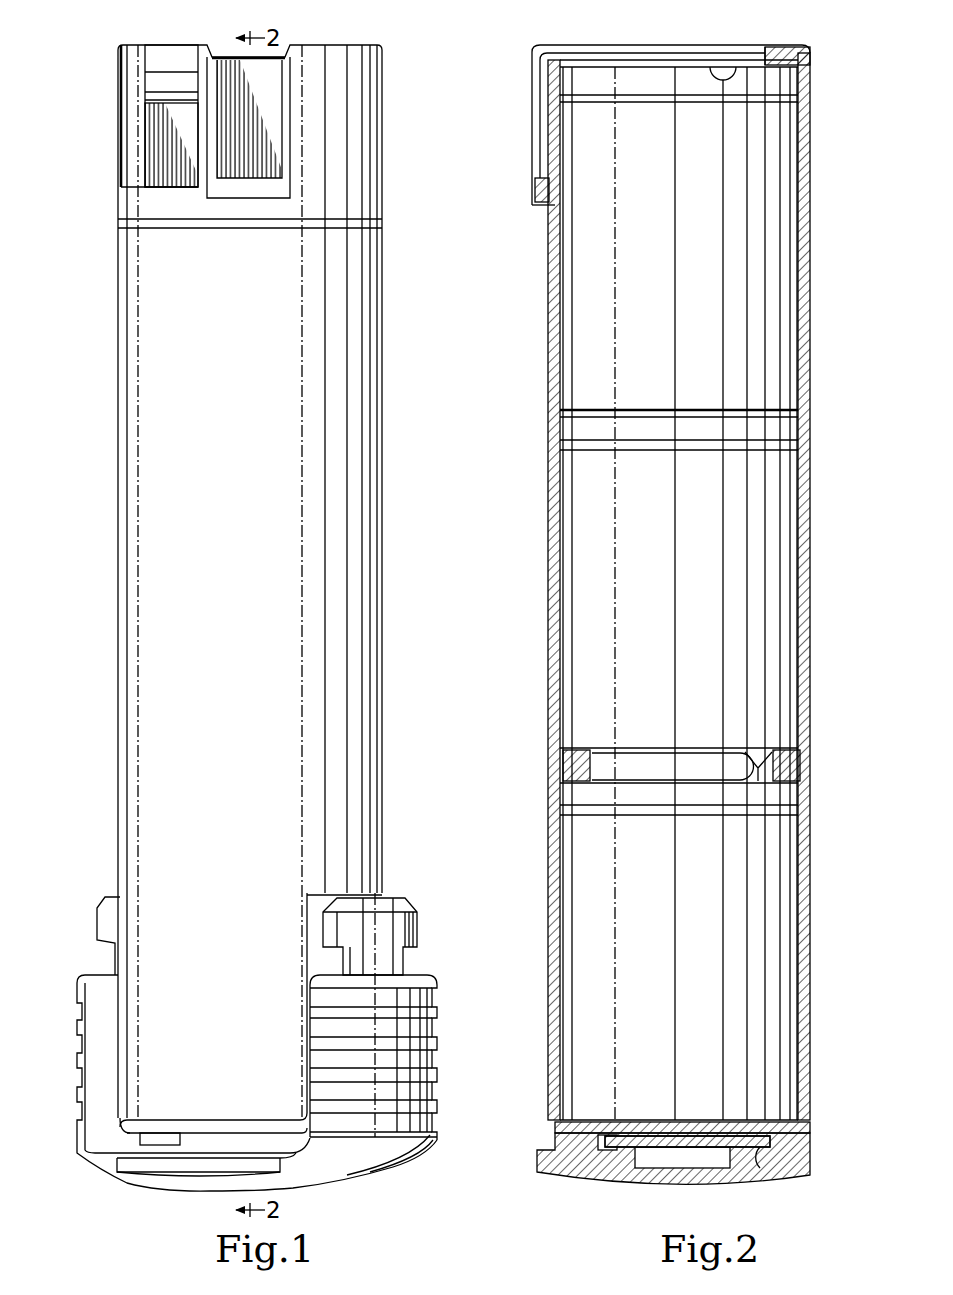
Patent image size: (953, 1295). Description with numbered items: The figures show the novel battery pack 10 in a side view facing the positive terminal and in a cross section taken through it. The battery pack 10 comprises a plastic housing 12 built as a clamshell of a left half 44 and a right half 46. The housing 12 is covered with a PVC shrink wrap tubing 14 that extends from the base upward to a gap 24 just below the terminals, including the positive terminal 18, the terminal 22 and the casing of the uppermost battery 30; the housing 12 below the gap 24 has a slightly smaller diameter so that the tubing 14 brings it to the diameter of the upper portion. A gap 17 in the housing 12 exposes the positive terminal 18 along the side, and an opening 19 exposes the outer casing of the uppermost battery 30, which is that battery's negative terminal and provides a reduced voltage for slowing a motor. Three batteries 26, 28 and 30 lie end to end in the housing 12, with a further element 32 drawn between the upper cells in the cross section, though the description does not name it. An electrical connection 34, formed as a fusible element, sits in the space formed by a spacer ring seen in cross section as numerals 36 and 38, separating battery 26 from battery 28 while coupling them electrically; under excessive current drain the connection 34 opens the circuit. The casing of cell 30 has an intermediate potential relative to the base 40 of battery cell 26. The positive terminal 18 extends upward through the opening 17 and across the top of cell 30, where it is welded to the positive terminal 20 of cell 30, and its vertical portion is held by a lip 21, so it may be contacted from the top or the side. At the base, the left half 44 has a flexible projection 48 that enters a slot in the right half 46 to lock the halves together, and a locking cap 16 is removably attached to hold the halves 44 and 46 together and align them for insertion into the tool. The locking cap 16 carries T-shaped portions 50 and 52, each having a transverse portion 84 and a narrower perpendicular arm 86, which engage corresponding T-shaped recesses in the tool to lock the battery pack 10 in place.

In FIG. 1, the battery pack 10 is at (112, 605).
In FIG. 1, the plastic housing 12 is at (385, 528).
In FIG. 2, the plastic housing 12 is at (822, 238).
In FIG. 1, the PVC shrink wrap tubing 14 is at (380, 607).
In FIG. 1, the locking cap 16 is at (440, 1012).
In FIG. 2, the locking cap 16 is at (812, 1150).
In FIG. 1, the gap 17 is at (280, 195).
In FIG. 2, the gap 17 is at (538, 118).
In FIG. 1, the positive terminal 18 is at (265, 90).
In FIG. 2, the positive terminal 18 is at (548, 150).
In FIG. 1, the opening 19 is at (130, 121).
In FIG. 2, the positive terminal of cell 20 is at (725, 75).
In FIG. 2, the lip 21 is at (545, 190).
In FIG. 1, the terminal 22 is at (120, 92).
In FIG. 1, the gap 24 is at (383, 222).
In FIG. 2, the gap 24 is at (562, 132).
In FIG. 2, the battery 26 is at (590, 857).
In FIG. 2, the battery 28 is at (580, 570).
In FIG. 1, the battery 30 is at (155, 160).
In FIG. 2, the battery 30 is at (788, 138).
In FIG. 2, the partition 32 is at (708, 412).
In FIG. 2, the electrical connection 34 is at (758, 752).
In FIG. 2, the spacer ring 36 is at (593, 768).
In FIG. 2, the spacer ring 38 is at (800, 765).
In FIG. 2, the base of battery cell 40 is at (702, 1125).
In FIG. 2, the left half of housing 44 is at (555, 1030).
In FIG. 2, the right half of housing 46 is at (806, 1045).
In FIG. 2, the projection 48 is at (725, 1183).
In FIG. 1, the T-shaped portion 50 is at (395, 898).
In FIG. 1, the T-shaped portion 52 is at (103, 900).
In FIG. 1, the transverse portion 84 is at (408, 932).
In FIG. 1, the arm 86 is at (393, 960).